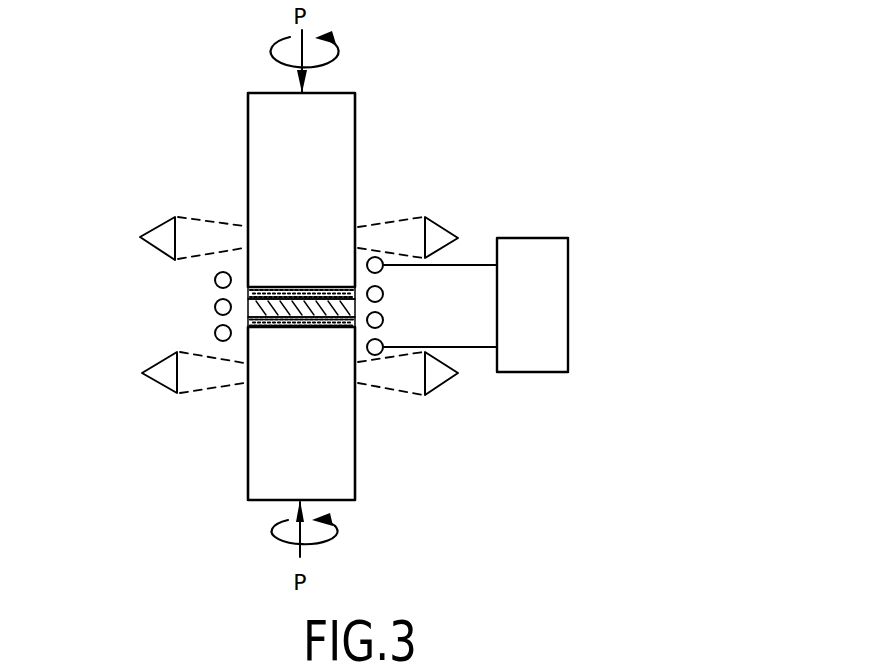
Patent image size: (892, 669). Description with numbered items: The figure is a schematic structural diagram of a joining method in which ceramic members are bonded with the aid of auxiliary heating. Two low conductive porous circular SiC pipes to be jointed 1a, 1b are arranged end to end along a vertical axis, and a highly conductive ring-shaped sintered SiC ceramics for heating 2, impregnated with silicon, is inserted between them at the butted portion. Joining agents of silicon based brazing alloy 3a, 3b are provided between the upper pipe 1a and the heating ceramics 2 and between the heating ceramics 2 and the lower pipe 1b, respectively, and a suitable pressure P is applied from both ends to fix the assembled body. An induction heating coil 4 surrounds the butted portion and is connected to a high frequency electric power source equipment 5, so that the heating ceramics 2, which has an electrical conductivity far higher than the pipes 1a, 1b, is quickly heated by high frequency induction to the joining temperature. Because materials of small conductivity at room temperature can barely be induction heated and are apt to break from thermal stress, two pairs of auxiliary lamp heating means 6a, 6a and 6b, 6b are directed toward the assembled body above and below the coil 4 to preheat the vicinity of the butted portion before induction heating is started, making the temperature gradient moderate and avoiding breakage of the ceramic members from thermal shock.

The SiC pipe to be jointed 1a is at (337, 142).
The SiC pipe to be jointed 1b is at (338, 472).
The sintered SiC ceramics for heating 2 is at (250, 312).
The silicon based brazing alloy joining agent 3a is at (275, 287).
The silicon based brazing alloy joining agent 3b is at (277, 327).
The induction heating coil 4 is at (392, 304).
The high frequency electric power source equipment 5 is at (557, 307).
The lamp heating means 6a is at (157, 235).
The lamp heating means 6b is at (160, 380).